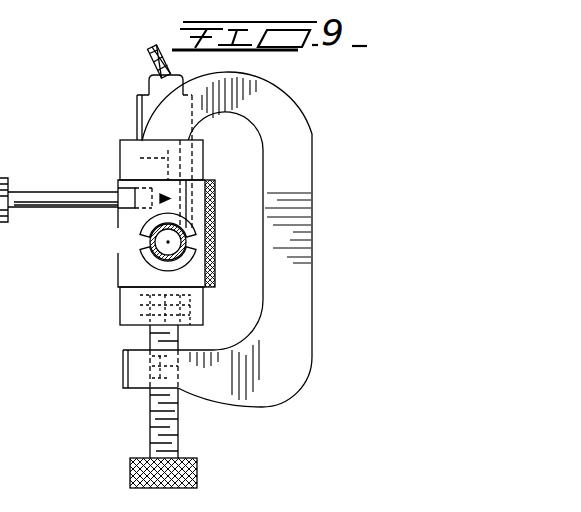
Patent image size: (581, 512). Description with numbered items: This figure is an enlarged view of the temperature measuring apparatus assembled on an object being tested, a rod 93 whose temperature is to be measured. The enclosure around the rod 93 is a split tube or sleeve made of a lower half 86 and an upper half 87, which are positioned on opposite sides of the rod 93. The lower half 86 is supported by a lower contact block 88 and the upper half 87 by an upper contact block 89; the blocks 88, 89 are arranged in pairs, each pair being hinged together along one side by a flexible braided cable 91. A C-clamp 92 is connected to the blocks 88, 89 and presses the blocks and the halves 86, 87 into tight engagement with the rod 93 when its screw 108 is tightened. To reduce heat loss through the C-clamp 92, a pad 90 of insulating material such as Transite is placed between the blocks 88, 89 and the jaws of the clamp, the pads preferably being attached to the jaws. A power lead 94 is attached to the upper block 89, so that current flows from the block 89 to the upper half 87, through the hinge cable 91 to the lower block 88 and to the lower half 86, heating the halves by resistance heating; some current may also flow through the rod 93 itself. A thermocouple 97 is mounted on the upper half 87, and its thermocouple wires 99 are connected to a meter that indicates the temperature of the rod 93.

The lower half 86 is at (155, 257).
The upper half 87 is at (148, 226).
The lower contact block 88 is at (127, 290).
The upper contact block 89 is at (118, 211).
The pad 90 is at (198, 165).
The flexible braided cable 91 is at (198, 229).
The C-clamp 92 is at (287, 405).
The rod 93 is at (215, 265).
The power lead 94 is at (65, 196).
The thermocouple 97 is at (129, 108).
The thermocouple wire 99 is at (150, 47).
The screw 108 is at (150, 413).